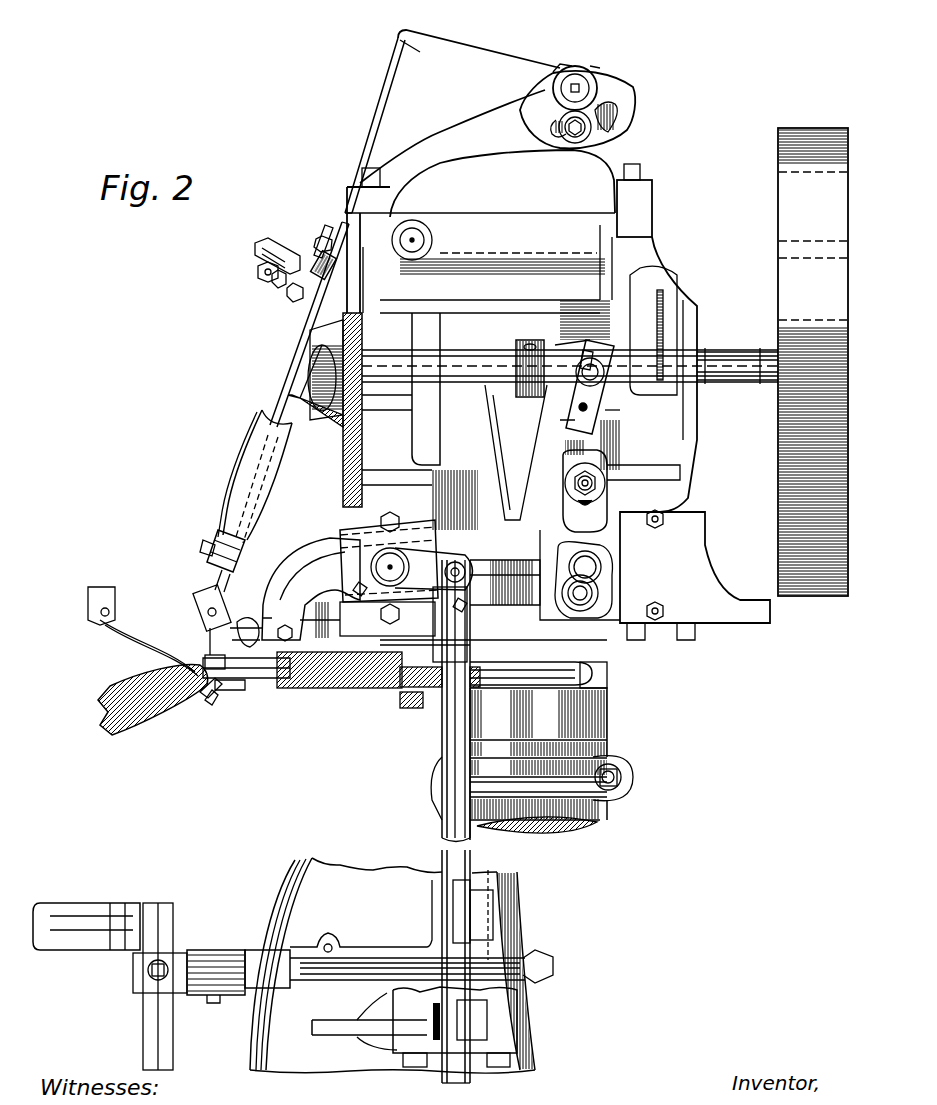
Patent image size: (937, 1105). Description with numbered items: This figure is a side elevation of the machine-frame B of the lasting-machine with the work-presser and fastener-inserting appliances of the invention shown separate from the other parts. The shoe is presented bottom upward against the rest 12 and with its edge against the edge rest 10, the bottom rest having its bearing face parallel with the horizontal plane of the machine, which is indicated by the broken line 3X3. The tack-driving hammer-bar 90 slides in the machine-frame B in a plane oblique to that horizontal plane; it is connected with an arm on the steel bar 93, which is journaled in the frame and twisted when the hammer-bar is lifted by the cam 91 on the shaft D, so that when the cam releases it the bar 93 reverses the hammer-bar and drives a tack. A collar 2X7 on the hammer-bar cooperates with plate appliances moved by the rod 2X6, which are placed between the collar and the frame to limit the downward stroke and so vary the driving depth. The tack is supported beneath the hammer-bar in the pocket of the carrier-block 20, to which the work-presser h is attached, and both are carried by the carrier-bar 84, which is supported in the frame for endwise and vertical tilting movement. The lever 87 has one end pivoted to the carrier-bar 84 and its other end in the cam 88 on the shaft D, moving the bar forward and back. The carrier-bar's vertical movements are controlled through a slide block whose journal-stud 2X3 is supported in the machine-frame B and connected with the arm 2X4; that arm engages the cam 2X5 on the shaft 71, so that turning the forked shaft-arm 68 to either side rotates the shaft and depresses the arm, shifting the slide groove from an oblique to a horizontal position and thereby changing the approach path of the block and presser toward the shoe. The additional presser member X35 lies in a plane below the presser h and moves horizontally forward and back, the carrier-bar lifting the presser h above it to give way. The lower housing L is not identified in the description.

The machine-frame B is at (521, 218).
The shaft D is at (446, 348).
The steel bar 93 is at (598, 90).
The cam 88 is at (545, 325).
The lever 87 is at (570, 545).
The tack-driving hammer-bar 90 is at (300, 350).
The cam 91 is at (305, 378).
The collar 2X7 is at (295, 252).
The rod 2X6 is at (270, 265).
The carrier-bar 84 is at (296, 548).
The journal-stud 2X3 is at (376, 575).
The arm 2X4 is at (434, 605).
The cam 2X5 is at (505, 582).
The horizontal plane of the machine 3X3 is at (477, 657).
The shaft 71 is at (470, 842).
The shaft-arm 68 is at (210, 945).
The lower housing L is at (392, 965).
The rest 12 is at (150, 658).
The carrier-block 20 is at (245, 690).
The work-presser h is at (202, 707).
The edge rest 10 is at (220, 700).
The presser member X35 is at (208, 700).